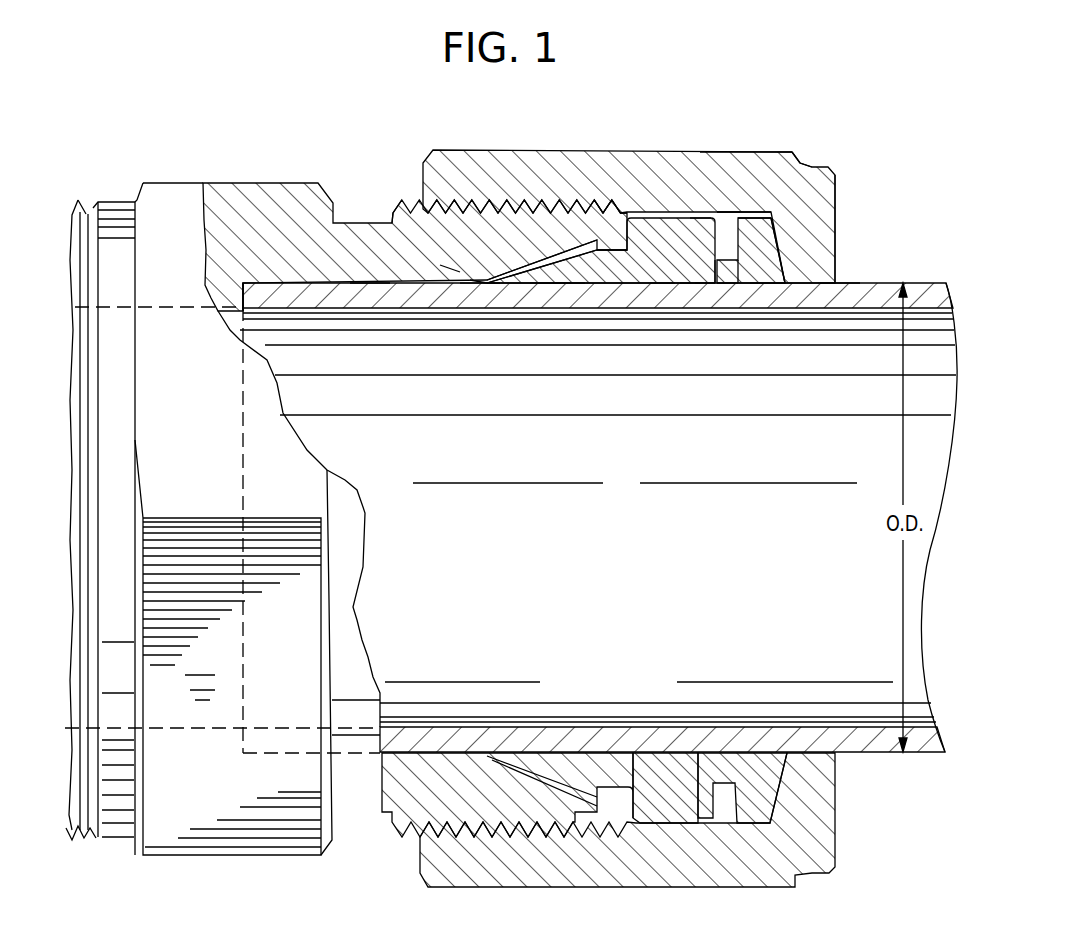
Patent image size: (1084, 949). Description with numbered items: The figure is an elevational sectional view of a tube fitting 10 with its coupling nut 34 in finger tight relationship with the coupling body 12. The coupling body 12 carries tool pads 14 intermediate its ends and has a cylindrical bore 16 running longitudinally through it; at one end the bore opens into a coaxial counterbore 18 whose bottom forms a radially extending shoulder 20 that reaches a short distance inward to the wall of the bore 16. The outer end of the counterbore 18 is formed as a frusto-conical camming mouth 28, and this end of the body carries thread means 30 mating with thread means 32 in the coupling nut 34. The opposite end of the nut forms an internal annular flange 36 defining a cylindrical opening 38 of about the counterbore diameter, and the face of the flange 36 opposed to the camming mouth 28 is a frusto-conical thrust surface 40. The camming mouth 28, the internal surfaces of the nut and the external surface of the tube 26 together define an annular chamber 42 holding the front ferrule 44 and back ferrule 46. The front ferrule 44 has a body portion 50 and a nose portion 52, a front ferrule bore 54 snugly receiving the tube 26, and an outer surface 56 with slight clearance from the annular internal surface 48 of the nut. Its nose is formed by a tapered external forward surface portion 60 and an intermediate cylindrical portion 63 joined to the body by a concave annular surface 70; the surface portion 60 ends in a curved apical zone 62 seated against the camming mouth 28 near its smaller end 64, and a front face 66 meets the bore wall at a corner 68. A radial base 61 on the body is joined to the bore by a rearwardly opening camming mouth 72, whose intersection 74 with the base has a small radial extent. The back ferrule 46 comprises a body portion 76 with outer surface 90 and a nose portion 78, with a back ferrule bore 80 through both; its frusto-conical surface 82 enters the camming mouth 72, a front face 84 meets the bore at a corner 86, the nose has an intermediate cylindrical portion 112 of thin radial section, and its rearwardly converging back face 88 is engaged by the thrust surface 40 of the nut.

The tube fitting 10 is at (313, 98).
The coupling body 12 is at (318, 180).
The tool pads 14 is at (235, 183).
The bore 16 is at (220, 313).
The counterbore 18 is at (370, 285).
The shoulder 20 is at (246, 300).
The tube 26 is at (878, 755).
The camming mouth 28 is at (550, 297).
The thread means 30 is at (400, 212).
The thread means 32 is at (480, 205).
The coupling nut 34 is at (723, 152).
The internal annular flange 36 is at (832, 196).
The opening 38 is at (840, 285).
The thrust surface 40 is at (763, 224).
The annular chamber 42 is at (596, 222).
The front ferrule 44 is at (626, 270).
The back ferrule 46 is at (788, 256).
The annular internal surface 48 is at (741, 824).
The body portion 50 is at (674, 230).
The nose portion 52 is at (568, 285).
The front ferrule bore 54 is at (595, 758).
The outer surface 56 is at (698, 232).
The tapered external forward surface portion 60 is at (548, 264).
The radial base 61 is at (734, 220).
The curved apical zone 62 is at (478, 279).
The intermediate cylindrical portion 63 is at (608, 235).
The smaller end 64 is at (470, 285).
The front face 66 is at (447, 268).
The corner 68 is at (485, 285).
The concave annular surface 70 is at (633, 205).
The camming mouth 72 is at (718, 284).
The intersection 74 is at (729, 284).
The body portion 76 is at (770, 236).
The nose portion 78 is at (745, 284).
The back ferrule bore 80 is at (766, 284).
The frusto-conical surface 82 is at (662, 284).
The front face 84 is at (690, 284).
The corner 86 is at (704, 284).
The back face 88 is at (783, 271).
The outer surface 90 is at (796, 165).
The intermediate cylindrical portion 112 is at (733, 212).